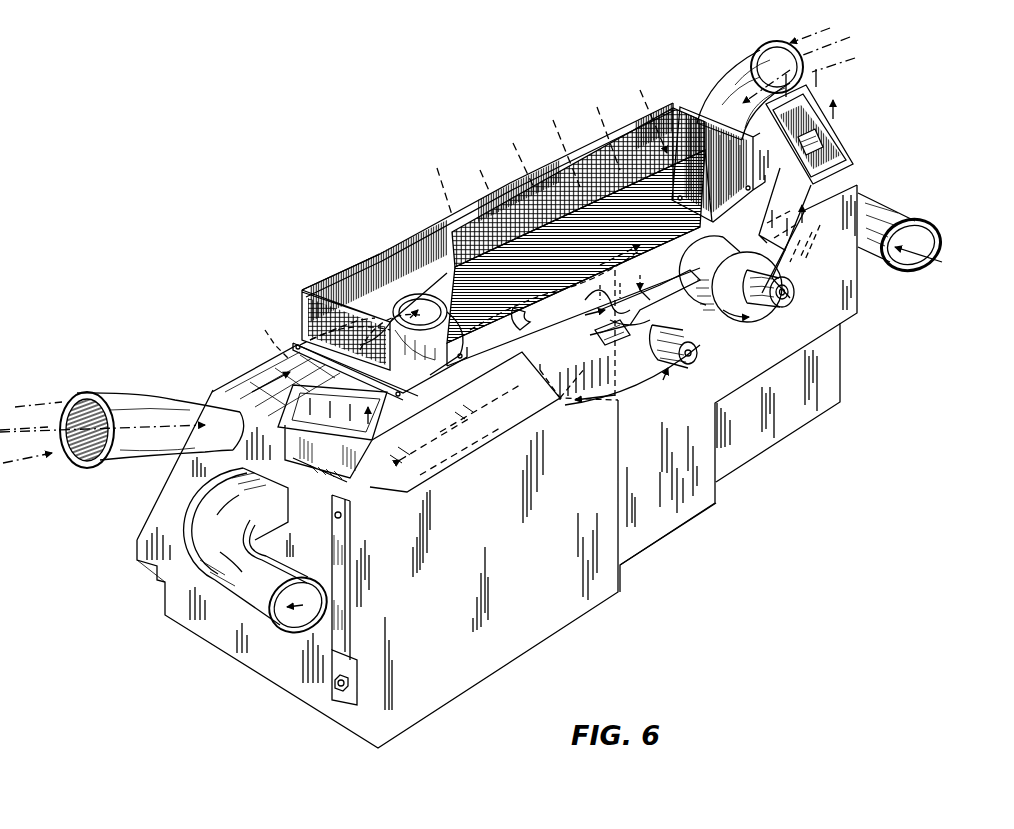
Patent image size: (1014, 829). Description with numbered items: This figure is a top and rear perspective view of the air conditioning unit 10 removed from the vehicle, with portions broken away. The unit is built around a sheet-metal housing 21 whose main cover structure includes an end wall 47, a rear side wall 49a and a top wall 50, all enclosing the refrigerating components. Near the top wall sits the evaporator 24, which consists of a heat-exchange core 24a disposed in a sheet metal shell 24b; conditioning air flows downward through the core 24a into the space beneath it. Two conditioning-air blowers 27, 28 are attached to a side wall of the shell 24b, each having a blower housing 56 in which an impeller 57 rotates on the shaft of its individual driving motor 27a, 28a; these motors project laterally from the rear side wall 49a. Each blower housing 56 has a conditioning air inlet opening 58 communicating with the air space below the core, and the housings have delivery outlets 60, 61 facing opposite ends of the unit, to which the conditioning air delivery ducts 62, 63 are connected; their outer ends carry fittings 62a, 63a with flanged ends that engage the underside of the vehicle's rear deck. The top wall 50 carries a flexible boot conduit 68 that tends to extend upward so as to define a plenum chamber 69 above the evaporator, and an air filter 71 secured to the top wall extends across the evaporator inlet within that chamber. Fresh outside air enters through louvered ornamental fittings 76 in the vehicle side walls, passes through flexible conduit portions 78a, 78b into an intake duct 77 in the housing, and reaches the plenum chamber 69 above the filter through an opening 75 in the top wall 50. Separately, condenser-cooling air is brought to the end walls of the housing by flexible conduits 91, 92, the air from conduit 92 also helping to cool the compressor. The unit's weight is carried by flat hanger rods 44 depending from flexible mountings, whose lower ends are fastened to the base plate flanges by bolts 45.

The air conditioning unit 10 is at (217, 385).
The housing 21 is at (522, 640).
The evaporator 24 is at (558, 278).
The heat-exchange core 24a is at (650, 220).
The sheet metal shell 24b is at (435, 240).
The blower 27 is at (663, 390).
The driving motor 27a is at (680, 358).
The blower 28 is at (753, 318).
The driving motor 28a is at (790, 293).
The hanger rod 44 is at (333, 558).
The bolt 45 is at (335, 690).
The end wall 47 is at (290, 670).
The rear side wall 49a is at (600, 588).
The top wall 50 is at (370, 278).
The blower housing 56 is at (740, 320).
The impeller 57 is at (618, 300).
The conditioning air inlet opening 58 is at (657, 346).
The delivery outlet 60 is at (597, 405).
The delivery outlet 61 is at (795, 262).
The conditioning air delivery duct 62 is at (486, 442).
The fitting 62a is at (333, 469).
The conditioning air delivery duct 63 is at (822, 228).
The fitting 63a is at (830, 192).
The flexible conduit 68 is at (684, 103).
The plenum chamber 69 is at (757, 124).
The air filter 71 is at (640, 136).
The opening 75 is at (450, 312).
The louvered ornamental fitting 76 is at (88, 394).
The intake duct 77 is at (305, 339).
The flexible conduit portion 78a is at (737, 87).
The flexible conduit portion 78b is at (132, 398).
The flexible conduit 91 is at (894, 215).
The flexible conduit 92 is at (222, 598).